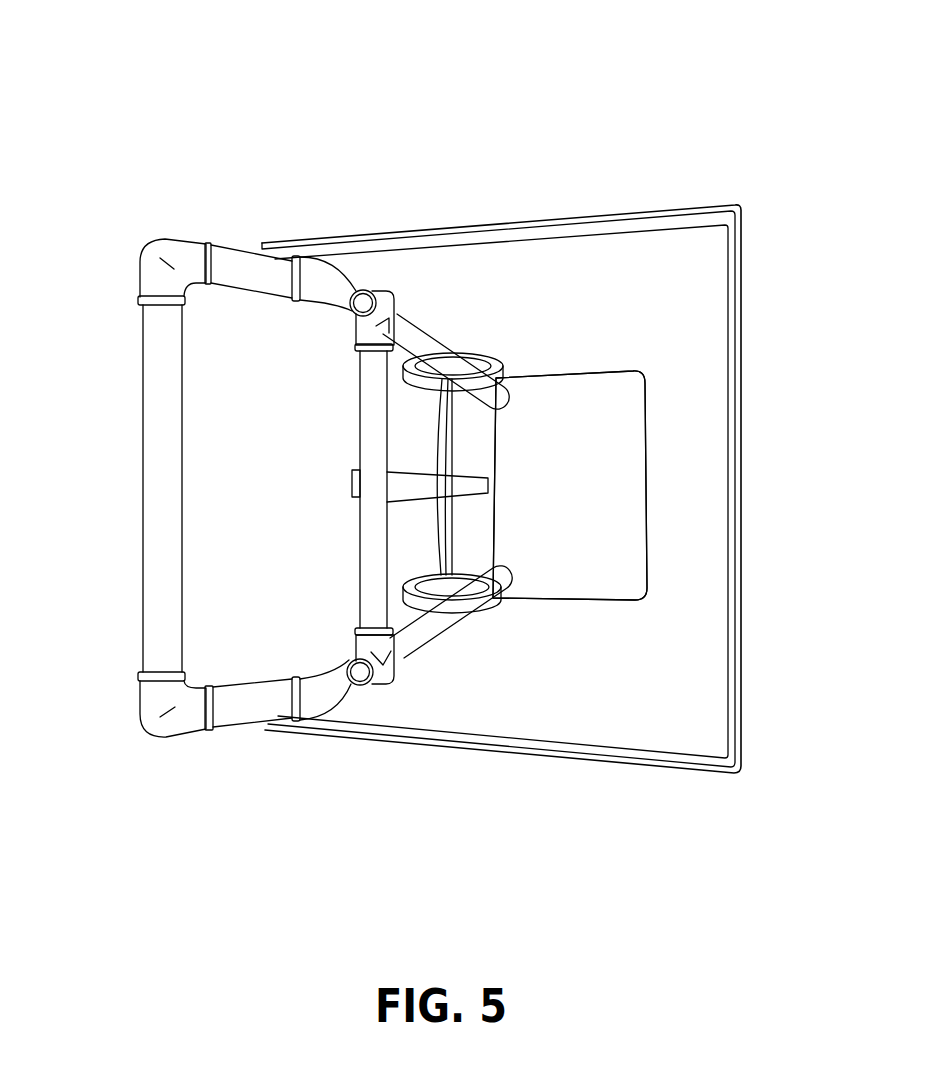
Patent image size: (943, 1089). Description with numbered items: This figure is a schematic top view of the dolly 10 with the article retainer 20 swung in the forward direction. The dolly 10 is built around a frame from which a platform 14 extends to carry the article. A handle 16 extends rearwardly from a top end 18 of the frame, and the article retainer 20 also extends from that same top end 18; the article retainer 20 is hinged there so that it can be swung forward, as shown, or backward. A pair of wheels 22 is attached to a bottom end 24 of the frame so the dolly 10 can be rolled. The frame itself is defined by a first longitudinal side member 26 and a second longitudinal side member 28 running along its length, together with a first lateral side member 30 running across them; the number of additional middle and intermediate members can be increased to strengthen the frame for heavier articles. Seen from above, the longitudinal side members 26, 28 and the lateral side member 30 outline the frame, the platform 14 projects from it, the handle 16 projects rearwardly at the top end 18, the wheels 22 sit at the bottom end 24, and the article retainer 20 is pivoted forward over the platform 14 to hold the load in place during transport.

The dolly 10 is at (196, 46).
The platform 14 is at (620, 554).
The handle 16 is at (142, 450).
The top end 18 is at (363, 297).
The article retainer 20 is at (605, 222).
The pair of wheels 22 is at (483, 347).
The bottom end 24 is at (633, 369).
The first longitudinal side member 26 is at (360, 678).
The second longitudinal side member 28 is at (433, 315).
The first lateral side member 30 is at (358, 565).